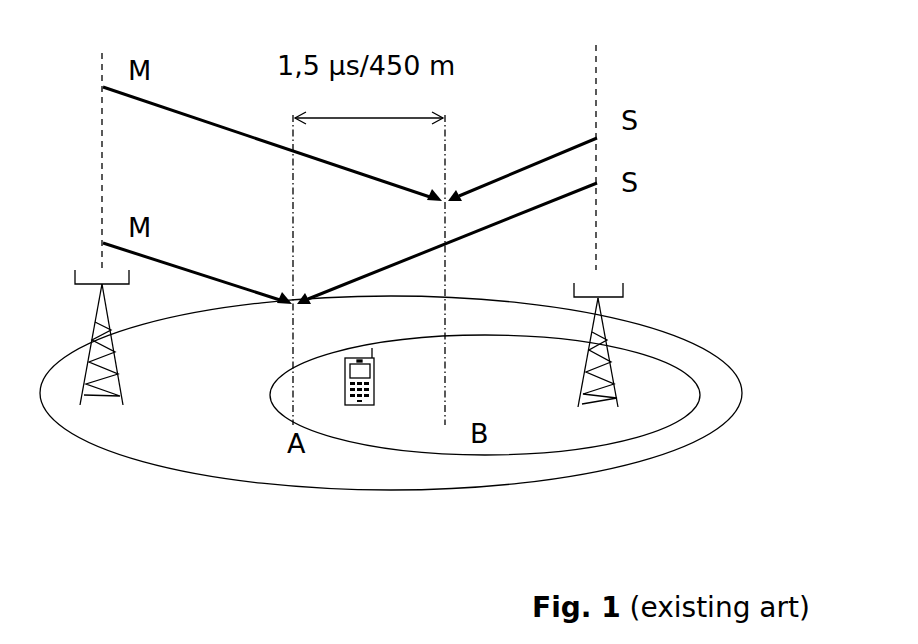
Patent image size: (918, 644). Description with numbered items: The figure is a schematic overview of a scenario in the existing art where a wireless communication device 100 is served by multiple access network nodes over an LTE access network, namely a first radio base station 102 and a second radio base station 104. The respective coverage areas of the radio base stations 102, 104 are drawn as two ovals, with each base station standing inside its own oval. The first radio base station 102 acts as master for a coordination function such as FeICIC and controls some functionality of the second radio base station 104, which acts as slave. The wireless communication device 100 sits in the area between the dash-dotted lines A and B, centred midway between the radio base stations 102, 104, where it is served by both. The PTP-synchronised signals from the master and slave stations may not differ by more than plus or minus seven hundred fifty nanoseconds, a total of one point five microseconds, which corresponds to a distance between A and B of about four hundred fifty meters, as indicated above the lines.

The wireless communication device 100 is at (368, 405).
The first radio base station 102 is at (113, 374).
The second radio base station 104 is at (580, 393).